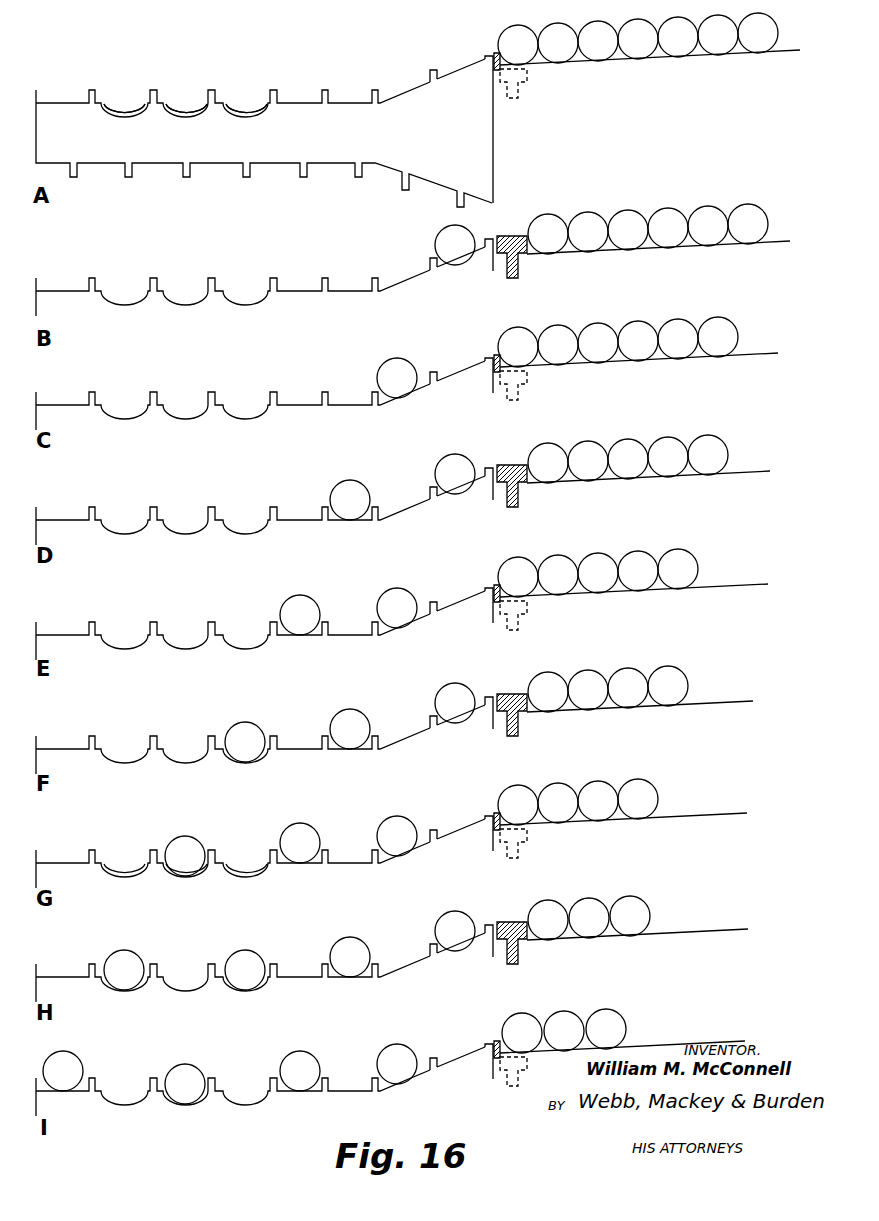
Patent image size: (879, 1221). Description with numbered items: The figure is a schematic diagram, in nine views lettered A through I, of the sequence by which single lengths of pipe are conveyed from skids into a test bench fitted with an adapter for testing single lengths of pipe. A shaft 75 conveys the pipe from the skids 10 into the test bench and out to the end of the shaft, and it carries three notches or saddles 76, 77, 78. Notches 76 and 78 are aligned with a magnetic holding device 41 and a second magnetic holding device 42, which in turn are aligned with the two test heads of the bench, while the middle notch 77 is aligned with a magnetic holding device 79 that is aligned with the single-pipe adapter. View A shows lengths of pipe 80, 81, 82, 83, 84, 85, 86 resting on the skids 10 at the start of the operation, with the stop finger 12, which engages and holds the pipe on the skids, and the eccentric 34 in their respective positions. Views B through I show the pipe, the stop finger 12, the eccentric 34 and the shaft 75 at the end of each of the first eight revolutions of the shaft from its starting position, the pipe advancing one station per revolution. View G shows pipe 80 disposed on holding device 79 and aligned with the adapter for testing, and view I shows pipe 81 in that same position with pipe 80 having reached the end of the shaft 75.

The skids 10 is at (787, 51).
The stop finger 12 is at (494, 53).
The eccentric 34 is at (527, 82).
The magnetic holding device 41 is at (133, 110).
The second magnetic holding device 42 is at (254, 110).
The shaft 75 is at (452, 74).
The notch 76 is at (121, 113).
The notch 77 is at (182, 113).
The notch 78 is at (243, 113).
The magnetic holding device 79 is at (192, 110).
The length of pipe 80 is at (290, 558).
The length of pipe 81 is at (371, 563).
The length of pipe 82 is at (449, 556).
The length of pipe 83 is at (517, 551).
The length of pipe 84 is at (600, 535).
The length of pipe 85 is at (641, 533).
The length of pipe 86 is at (682, 531).